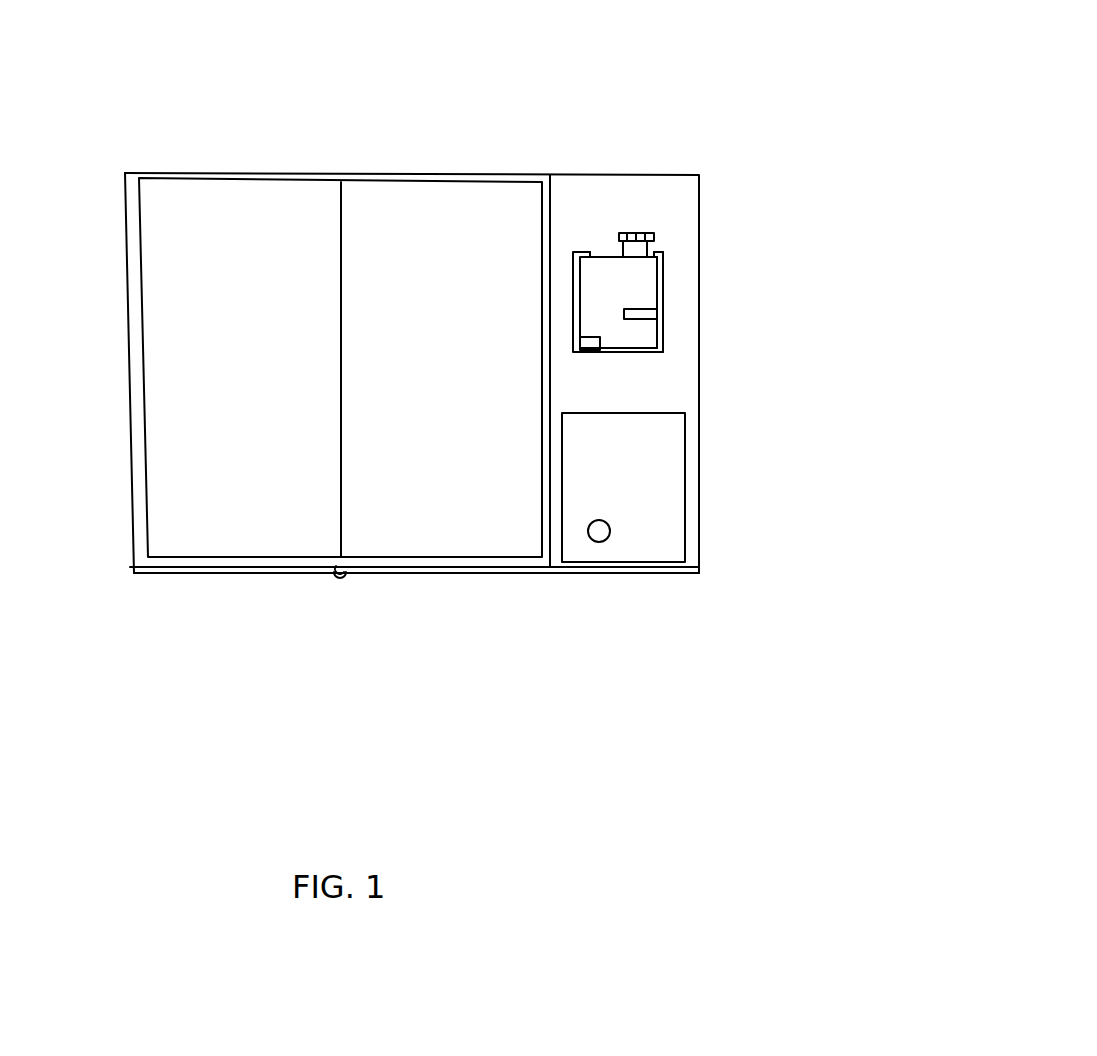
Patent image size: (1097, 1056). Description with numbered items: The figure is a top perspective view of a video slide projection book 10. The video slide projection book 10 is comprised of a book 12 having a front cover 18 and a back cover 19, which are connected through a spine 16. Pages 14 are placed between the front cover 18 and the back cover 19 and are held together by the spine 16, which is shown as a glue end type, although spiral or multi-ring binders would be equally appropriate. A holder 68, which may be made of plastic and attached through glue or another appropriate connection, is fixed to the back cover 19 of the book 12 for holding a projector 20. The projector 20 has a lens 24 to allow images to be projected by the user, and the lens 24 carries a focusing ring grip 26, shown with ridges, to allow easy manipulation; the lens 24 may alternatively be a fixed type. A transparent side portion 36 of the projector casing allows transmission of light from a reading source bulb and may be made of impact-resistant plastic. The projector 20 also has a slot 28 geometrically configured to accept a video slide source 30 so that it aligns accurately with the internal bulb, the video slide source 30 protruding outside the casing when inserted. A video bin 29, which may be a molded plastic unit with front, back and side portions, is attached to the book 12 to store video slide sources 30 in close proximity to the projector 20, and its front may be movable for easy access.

The video slide projection book 10 is at (711, 61).
The book 12 is at (465, 575).
The pages 14 is at (190, 543).
The spine 16 is at (340, 580).
The front cover 18 is at (136, 463).
The back cover 19 is at (553, 575).
The projector 20 is at (649, 284).
The lens 24 is at (647, 248).
The focusing ring grip 26 is at (654, 236).
The slot 28 is at (634, 315).
The video bin 29 is at (665, 520).
The video slide source 30 is at (605, 540).
The transparent side portion 36 is at (595, 343).
The holder 68 is at (663, 345).